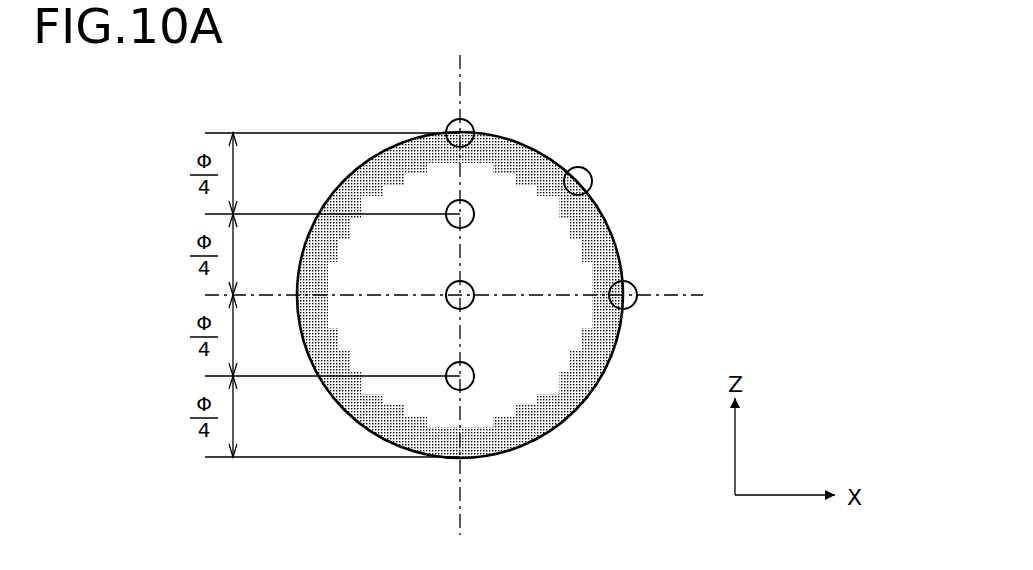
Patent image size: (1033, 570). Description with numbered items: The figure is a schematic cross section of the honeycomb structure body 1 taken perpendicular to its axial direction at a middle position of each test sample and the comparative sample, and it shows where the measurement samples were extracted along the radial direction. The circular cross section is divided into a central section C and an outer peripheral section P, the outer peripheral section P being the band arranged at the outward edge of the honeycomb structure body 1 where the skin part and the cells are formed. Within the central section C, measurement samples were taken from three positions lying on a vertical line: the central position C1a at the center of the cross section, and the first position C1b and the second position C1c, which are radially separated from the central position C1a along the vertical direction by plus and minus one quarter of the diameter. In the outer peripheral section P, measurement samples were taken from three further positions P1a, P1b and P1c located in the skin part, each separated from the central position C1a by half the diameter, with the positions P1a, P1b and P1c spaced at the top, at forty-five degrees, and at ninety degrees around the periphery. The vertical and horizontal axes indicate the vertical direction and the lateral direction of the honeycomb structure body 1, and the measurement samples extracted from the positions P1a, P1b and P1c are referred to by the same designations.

The honeycomb structure body 1 is at (598, 142).
The central section C is at (518, 258).
The outer peripheral section P is at (540, 418).
The sampling position P1a is at (450, 123).
The sampling position P1b is at (592, 177).
The sampling position P1c is at (632, 285).
The central position C1a is at (470, 305).
The first position C1b is at (473, 208).
The second position C1c is at (468, 388).